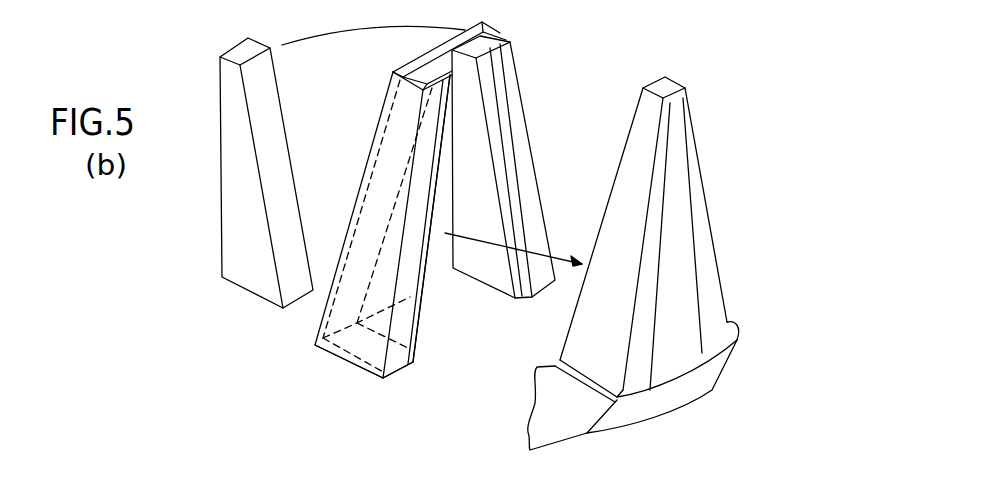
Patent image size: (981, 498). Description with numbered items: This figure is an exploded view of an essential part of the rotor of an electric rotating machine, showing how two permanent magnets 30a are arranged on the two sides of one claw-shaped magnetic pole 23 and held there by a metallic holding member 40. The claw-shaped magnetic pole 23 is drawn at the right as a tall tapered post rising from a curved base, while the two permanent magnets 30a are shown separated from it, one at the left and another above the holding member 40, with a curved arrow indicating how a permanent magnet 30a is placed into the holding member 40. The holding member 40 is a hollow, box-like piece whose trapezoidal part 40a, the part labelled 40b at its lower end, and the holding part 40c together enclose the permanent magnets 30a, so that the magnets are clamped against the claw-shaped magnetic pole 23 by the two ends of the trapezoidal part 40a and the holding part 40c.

The permanent magnet 30a is at (279, 90).
The holding member 40 is at (369, 155).
The trapezoidal part 40a is at (435, 268).
The bottom of holder 40b is at (354, 357).
The holding part 40c is at (538, 203).
The claw-shaped magnetic pole 23 is at (687, 183).